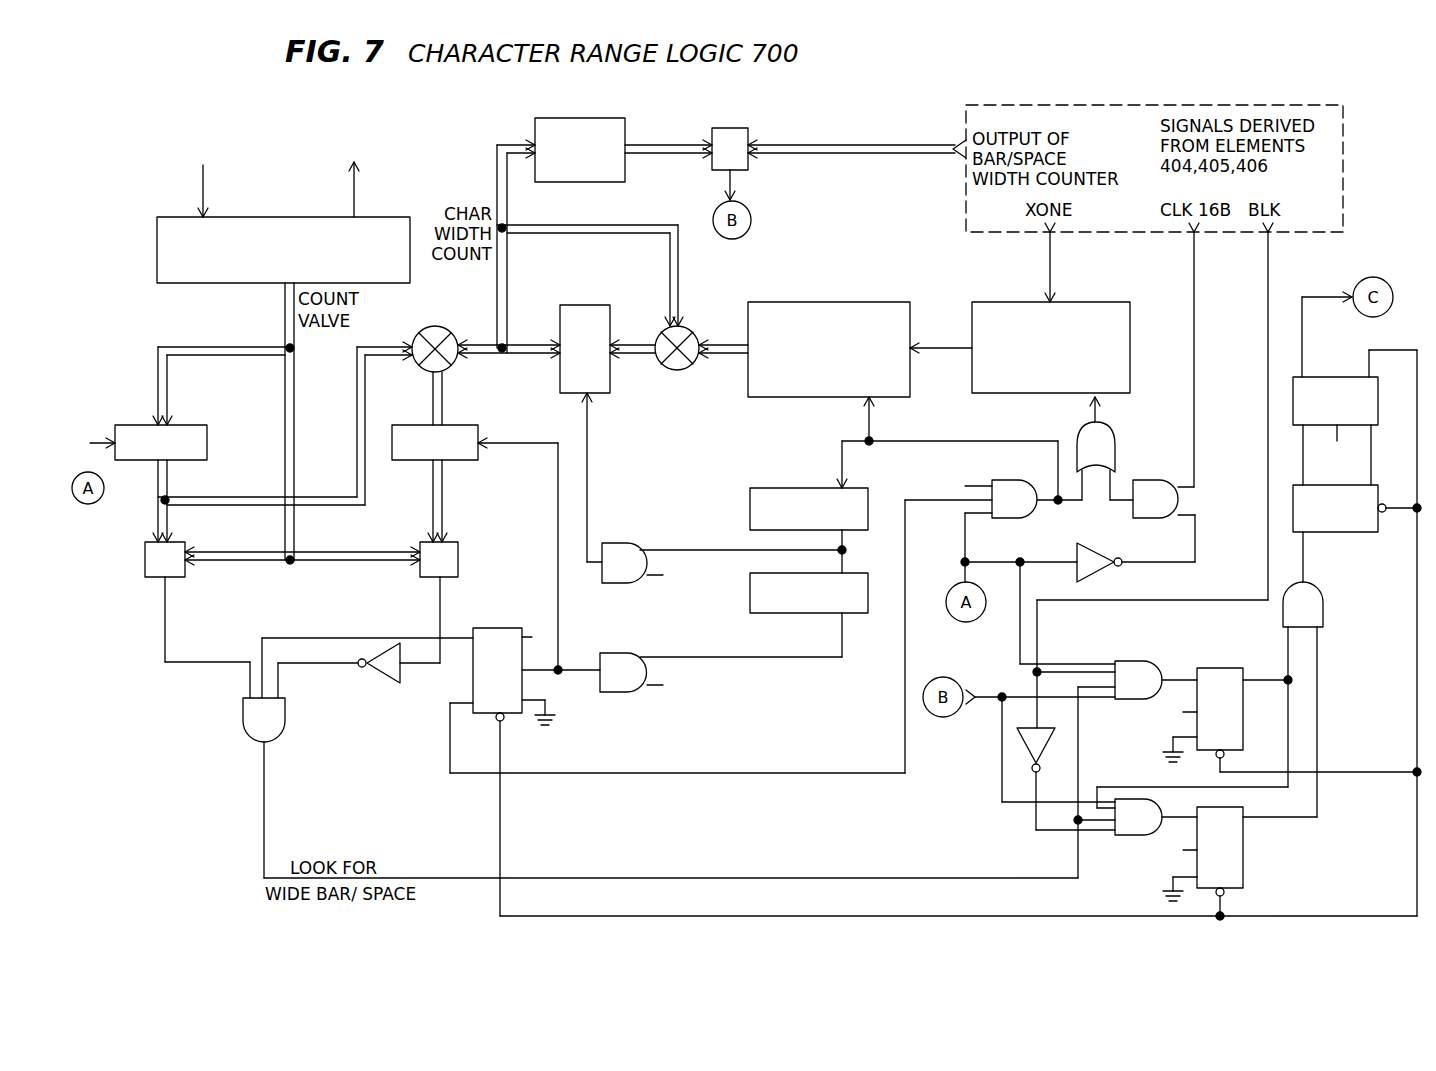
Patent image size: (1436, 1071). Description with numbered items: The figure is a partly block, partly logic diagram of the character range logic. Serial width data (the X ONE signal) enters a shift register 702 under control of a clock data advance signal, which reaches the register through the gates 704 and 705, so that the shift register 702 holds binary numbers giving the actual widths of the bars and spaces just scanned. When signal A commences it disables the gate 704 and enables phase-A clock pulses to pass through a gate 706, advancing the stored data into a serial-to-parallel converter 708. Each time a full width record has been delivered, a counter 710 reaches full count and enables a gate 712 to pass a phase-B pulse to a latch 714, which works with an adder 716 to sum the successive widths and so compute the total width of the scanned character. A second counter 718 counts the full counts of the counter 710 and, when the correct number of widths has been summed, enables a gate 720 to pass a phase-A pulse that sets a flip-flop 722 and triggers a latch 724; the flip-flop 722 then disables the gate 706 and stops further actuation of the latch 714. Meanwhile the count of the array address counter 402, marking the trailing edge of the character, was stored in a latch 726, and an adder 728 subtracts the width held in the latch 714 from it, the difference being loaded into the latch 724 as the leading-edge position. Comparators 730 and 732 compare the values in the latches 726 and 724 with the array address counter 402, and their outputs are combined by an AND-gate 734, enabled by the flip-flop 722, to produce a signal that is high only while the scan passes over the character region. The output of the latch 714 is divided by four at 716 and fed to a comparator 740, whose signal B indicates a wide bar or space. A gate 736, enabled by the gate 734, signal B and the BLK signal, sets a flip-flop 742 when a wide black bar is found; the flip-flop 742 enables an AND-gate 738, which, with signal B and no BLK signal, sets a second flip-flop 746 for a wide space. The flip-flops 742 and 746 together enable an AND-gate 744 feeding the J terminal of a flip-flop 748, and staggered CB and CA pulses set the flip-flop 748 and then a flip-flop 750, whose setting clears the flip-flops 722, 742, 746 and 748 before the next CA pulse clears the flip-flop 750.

The array address counter 402 is at (157, 272).
The shift register 702 is at (1085, 300).
The gate 704 is at (1160, 478).
The gate 705 is at (1096, 461).
The gate 706 is at (1032, 460).
The serial-to-parallel converter 708 is at (850, 300).
The counter 710 is at (793, 462).
The gate 712 is at (618, 543).
The latch 714 is at (610, 385).
The adder / divide-by-four box 716 is at (598, 182).
The second counter 718 is at (795, 613).
The gate 720 is at (636, 652).
The flip-flop 722 is at (483, 628).
The latch 724 is at (468, 462).
The latch 726 is at (202, 425).
The adder 728 is at (432, 326).
The comparator 730 is at (185, 577).
The comparator 732 is at (458, 556).
The AND-gate 734 is at (243, 724).
The gate 736 is at (1133, 660).
The AND-gate 738 is at (1130, 835).
The comparator 740 is at (750, 170).
The flip-flop 742 is at (1215, 666).
The AND-gate 744 is at (1323, 615).
The second flip-flop 746 is at (1243, 866).
The flip-flop 748 is at (1375, 535).
The flip-flop 750 is at (1338, 377).